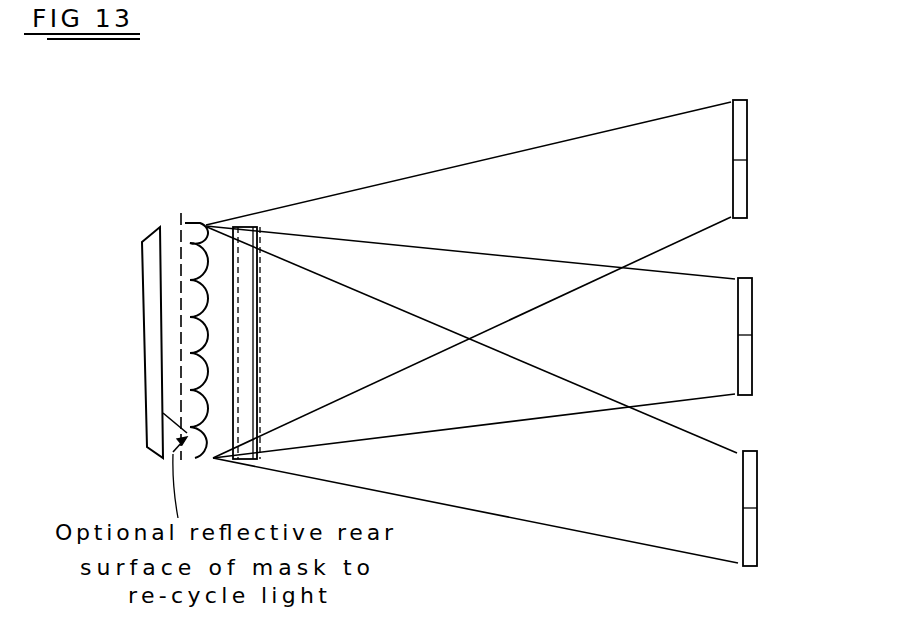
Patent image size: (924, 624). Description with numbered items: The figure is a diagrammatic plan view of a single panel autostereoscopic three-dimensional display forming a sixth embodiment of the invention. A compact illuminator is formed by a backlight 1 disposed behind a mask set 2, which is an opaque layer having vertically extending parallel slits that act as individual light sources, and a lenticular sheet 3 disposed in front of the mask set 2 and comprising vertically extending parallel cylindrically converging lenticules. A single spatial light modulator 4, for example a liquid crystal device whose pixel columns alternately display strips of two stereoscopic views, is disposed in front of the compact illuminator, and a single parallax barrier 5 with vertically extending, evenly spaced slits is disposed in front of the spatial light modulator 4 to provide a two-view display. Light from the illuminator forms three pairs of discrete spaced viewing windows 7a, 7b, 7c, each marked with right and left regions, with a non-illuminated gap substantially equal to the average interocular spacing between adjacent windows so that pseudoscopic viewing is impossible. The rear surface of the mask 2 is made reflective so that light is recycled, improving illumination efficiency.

The backlight 1 is at (152, 234).
The mask set 2 is at (180, 213).
The lenticular sheet 3 is at (185, 222).
The spatial light modulator 4 is at (254, 228).
The parallax barrier 5 is at (260, 290).
The viewing window 7a is at (760, 160).
The viewing window 7b is at (765, 335).
The viewing window 7c is at (770, 508).